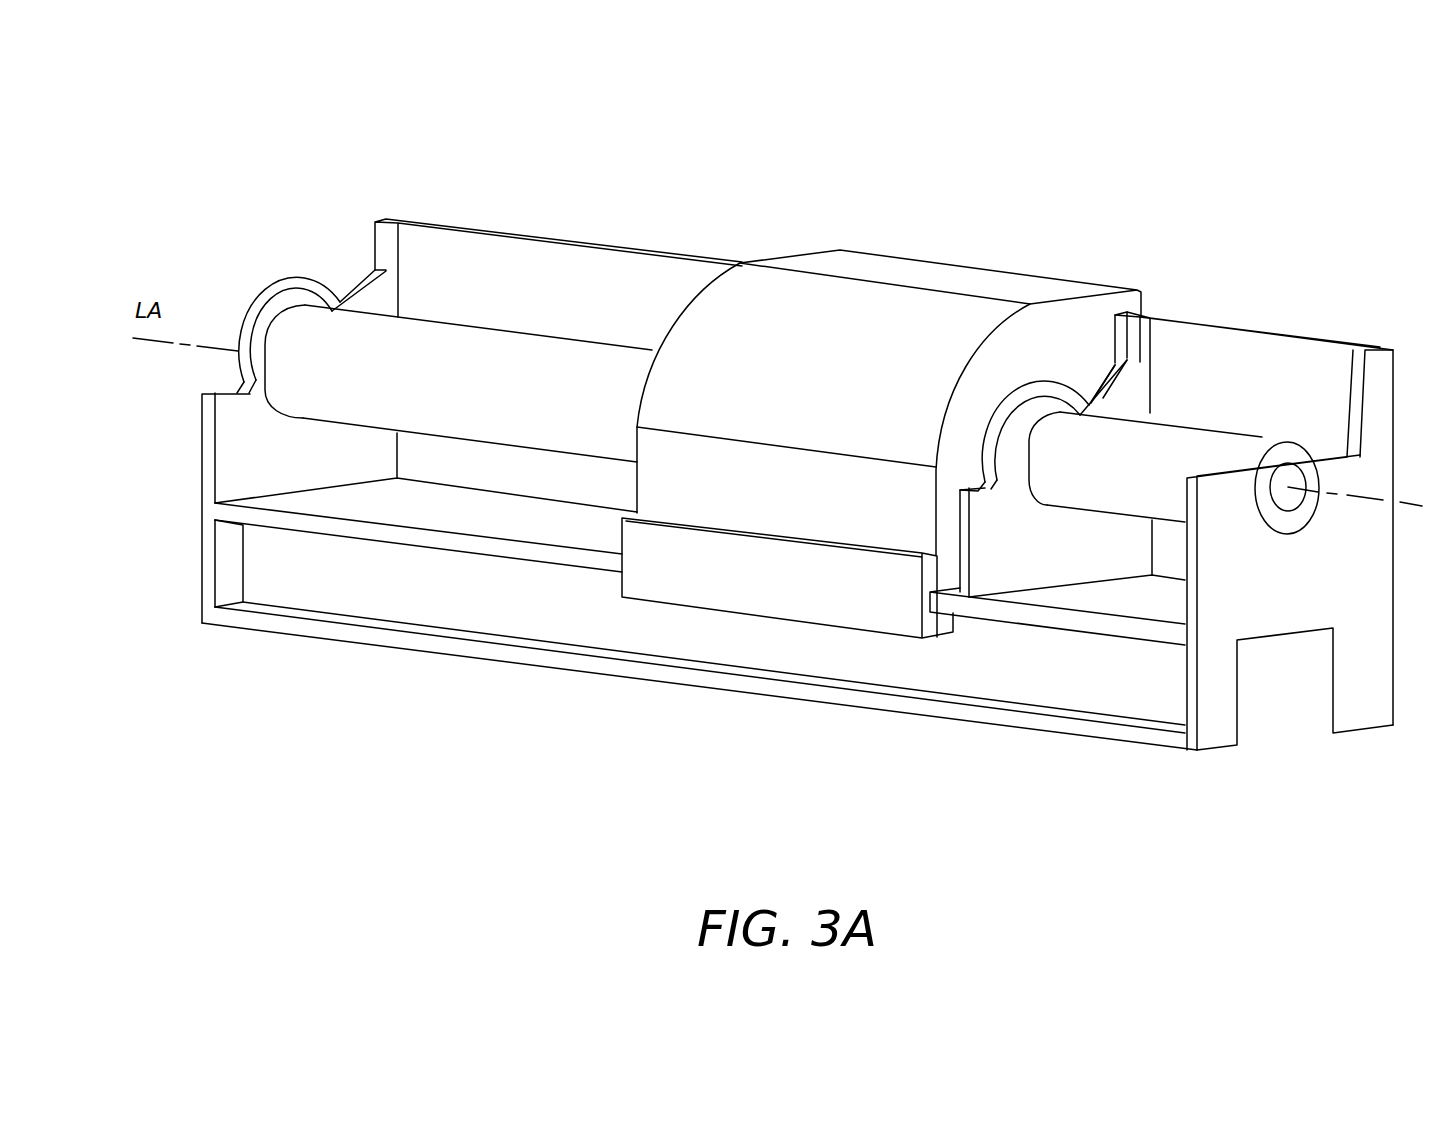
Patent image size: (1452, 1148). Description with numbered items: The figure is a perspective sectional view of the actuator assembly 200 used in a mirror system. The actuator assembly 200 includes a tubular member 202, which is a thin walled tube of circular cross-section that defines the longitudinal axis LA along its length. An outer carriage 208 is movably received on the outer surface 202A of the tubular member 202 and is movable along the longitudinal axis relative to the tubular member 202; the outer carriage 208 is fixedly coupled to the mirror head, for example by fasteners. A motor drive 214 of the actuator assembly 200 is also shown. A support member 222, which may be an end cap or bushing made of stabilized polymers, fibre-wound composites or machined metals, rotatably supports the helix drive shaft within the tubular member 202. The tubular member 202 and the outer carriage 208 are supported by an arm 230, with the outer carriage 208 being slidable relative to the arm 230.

The actuator assembly 200 is at (1222, 88).
The tubular member 202 is at (434, 300).
The outer surface 202A is at (463, 348).
The outer carriage 208 is at (1018, 284).
The motor drive 214 is at (1160, 445).
The support member 222 is at (1040, 383).
The arm 230 is at (1322, 372).